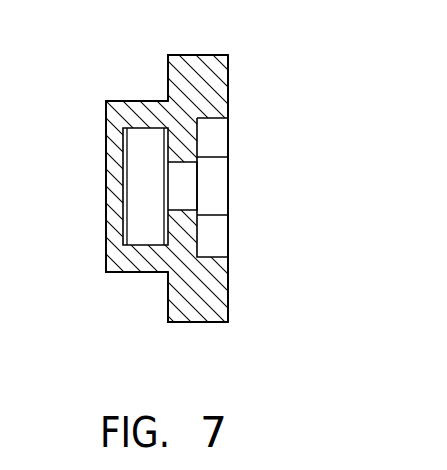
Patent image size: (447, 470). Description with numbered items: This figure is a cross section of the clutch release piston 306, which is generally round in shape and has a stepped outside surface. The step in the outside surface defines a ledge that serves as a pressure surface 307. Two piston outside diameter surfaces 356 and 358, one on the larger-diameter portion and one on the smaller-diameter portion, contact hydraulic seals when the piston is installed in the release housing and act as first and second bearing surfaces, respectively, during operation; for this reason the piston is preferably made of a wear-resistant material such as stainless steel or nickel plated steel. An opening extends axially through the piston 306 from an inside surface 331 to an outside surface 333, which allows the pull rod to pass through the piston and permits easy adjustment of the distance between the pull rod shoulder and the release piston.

The piston 306 is at (200, 62).
The pressure surface 307 is at (167, 72).
The outside surface 333 is at (228, 88).
The inside surface 331 is at (106, 265).
The piston outside diameter surface 358 is at (143, 274).
The piston outside diameter surface 356 is at (202, 323).